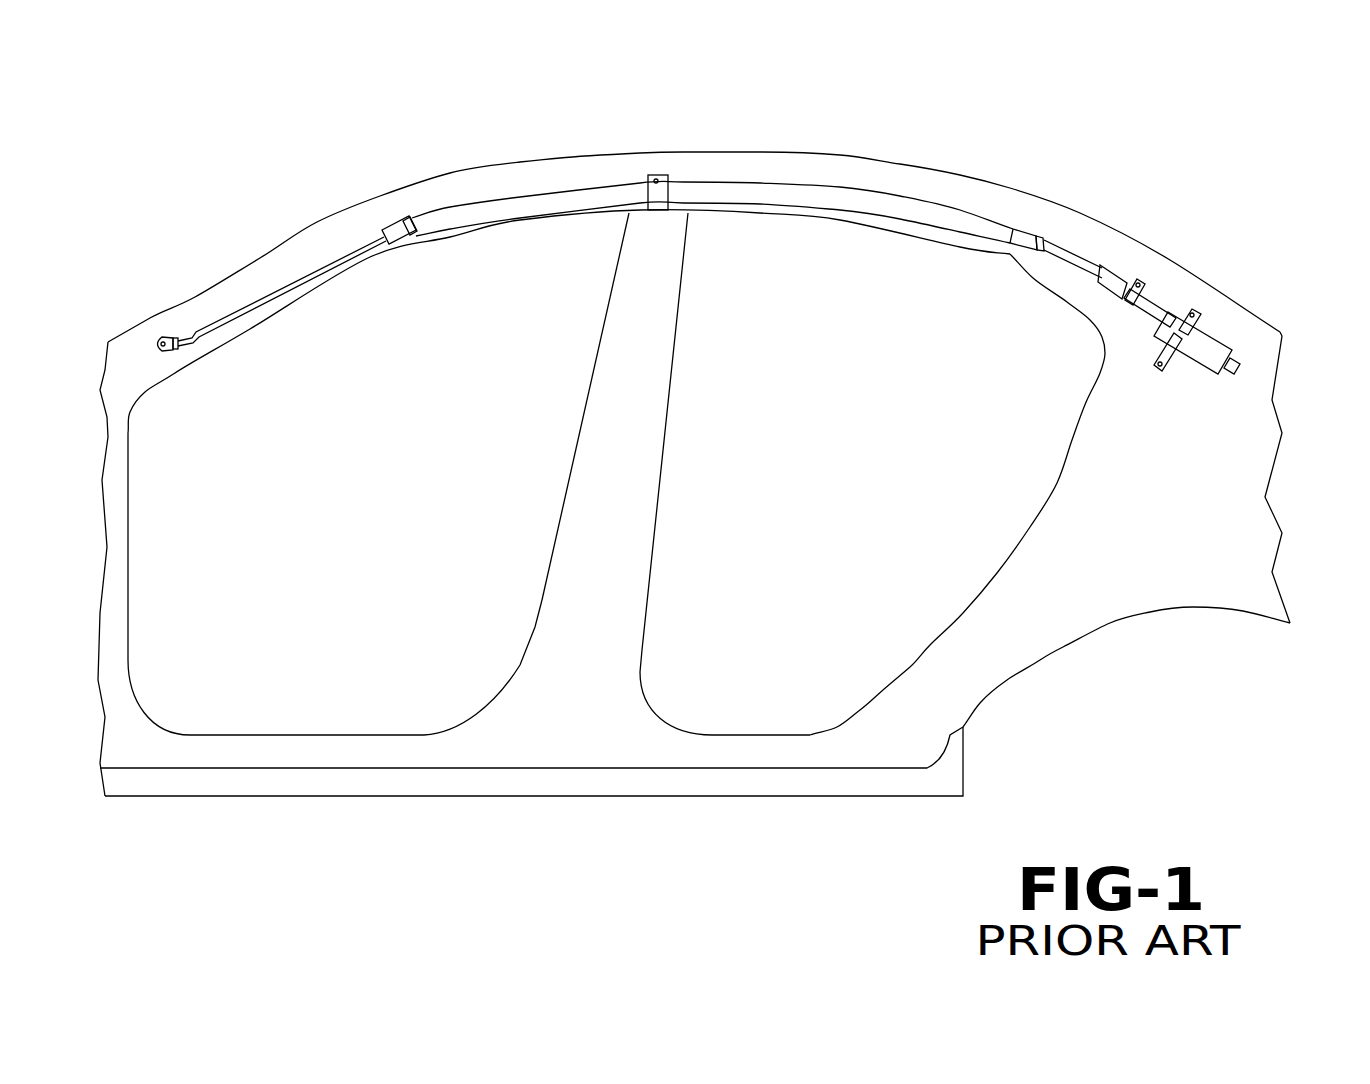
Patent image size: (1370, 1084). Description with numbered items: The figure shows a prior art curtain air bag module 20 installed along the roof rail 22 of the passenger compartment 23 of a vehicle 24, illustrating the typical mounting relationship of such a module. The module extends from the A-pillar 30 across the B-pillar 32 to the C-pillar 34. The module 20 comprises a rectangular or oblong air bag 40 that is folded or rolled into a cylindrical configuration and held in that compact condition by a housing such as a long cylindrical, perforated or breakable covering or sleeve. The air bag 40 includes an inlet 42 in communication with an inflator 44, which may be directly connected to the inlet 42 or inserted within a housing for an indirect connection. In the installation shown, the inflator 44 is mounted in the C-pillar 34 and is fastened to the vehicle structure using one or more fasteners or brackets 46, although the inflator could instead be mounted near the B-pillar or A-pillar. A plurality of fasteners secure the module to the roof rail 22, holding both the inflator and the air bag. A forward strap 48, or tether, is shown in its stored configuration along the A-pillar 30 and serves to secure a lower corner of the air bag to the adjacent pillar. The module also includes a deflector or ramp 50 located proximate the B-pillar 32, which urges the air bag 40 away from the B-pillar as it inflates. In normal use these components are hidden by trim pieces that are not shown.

The curtain air bag module 20 is at (712, 147).
The roof rail 22 is at (317, 220).
The passenger compartment 23 is at (772, 637).
The vehicle 24 is at (1042, 659).
The A-pillar 30 is at (185, 300).
The B-pillar 32 is at (653, 376).
The C-pillar 34 is at (1207, 293).
The air bag 40 is at (617, 198).
The inlet 42 is at (1017, 247).
The inflator 44 is at (1152, 313).
The fasteners or brackets 46 is at (1135, 287).
The forward strap 48 is at (297, 280).
The deflector or ramp 50 is at (663, 193).